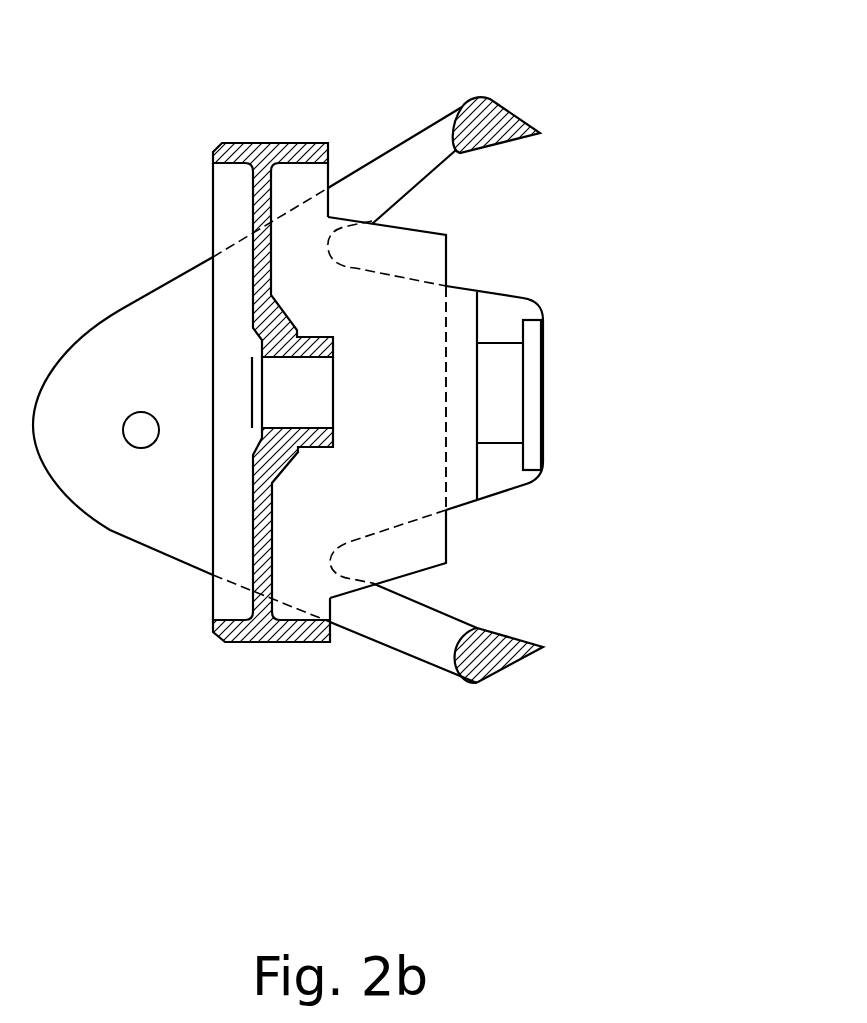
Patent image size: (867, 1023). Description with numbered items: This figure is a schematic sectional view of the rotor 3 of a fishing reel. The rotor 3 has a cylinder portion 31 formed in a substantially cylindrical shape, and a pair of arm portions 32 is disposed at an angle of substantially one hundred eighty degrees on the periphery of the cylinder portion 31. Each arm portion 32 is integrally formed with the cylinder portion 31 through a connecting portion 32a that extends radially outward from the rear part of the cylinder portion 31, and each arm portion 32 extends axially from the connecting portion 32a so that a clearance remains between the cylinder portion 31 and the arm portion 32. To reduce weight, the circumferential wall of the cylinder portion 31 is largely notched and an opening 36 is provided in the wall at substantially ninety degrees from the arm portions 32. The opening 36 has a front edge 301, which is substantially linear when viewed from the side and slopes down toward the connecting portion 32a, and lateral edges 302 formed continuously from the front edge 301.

The rotor 3 is at (377, 392).
The cylinder portion 31 is at (213, 187).
The front edge 301 is at (328, 151).
The lateral edges 302 is at (427, 223).
The arm portion 32 is at (533, 300).
The connecting portion 32a is at (465, 293).
The opening 36 is at (383, 128).